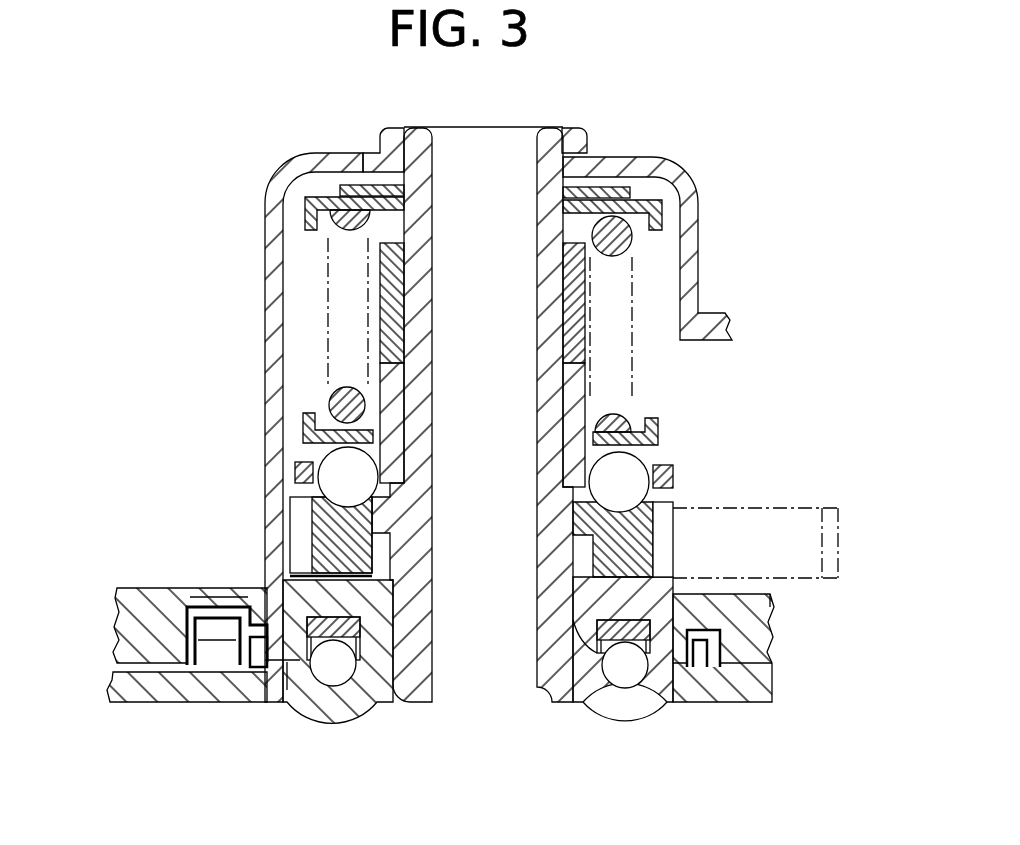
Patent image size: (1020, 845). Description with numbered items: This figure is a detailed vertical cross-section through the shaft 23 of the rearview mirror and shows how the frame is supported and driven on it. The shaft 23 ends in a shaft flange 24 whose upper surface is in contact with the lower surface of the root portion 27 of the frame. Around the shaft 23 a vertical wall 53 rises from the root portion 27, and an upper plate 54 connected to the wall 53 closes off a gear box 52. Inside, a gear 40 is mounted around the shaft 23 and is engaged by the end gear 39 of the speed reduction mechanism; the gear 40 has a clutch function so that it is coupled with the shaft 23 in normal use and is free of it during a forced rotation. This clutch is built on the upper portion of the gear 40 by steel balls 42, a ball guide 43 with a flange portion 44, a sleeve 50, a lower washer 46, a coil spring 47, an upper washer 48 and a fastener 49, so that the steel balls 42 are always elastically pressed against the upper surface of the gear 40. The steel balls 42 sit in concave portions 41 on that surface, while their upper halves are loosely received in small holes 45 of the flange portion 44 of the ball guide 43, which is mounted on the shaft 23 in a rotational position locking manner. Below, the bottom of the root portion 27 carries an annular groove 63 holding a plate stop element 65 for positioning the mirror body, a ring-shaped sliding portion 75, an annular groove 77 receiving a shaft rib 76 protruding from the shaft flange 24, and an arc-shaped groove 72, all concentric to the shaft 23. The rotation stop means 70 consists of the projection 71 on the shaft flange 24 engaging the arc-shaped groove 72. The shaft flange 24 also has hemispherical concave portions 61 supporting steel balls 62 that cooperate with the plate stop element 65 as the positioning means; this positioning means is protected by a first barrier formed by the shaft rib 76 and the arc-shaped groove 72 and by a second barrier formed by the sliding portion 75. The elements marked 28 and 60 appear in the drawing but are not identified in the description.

The shaft 23 is at (555, 128).
The shaft flange 24 is at (740, 690).
The root portion 27 is at (128, 605).
The hub 28 is at (392, 563).
The end gear 39 is at (768, 512).
The gear 40 is at (622, 540).
The concave portions 41 is at (322, 510).
The steel balls 42 is at (338, 487).
The ball guide 43 is at (640, 345).
The flange portion 44 is at (300, 470).
The small holes 45 is at (640, 438).
The lower washer 46 is at (305, 425).
The coil spring 47 is at (623, 380).
The upper washer 48 is at (307, 160).
The fastener 49 is at (356, 160).
The sleeve 50 is at (583, 300).
The gear box 52 is at (249, 438).
The vertical wall 53 is at (272, 378).
The upper plate 54 is at (272, 232).
The bearing assembly 60 is at (485, 721).
The hemispherical concave portions 61 is at (345, 668).
The steel balls 62 is at (623, 700).
The annular groove 63 is at (315, 650).
The plate stop element 65 is at (295, 680).
The rotation stop means 70 is at (200, 610).
The projection 71 is at (208, 650).
The arc-shaped groove 72 is at (220, 600).
The ring-shaped sliding portion 75 is at (292, 660).
The shaft rib 76 is at (258, 648).
The annular groove 77 is at (771, 625).